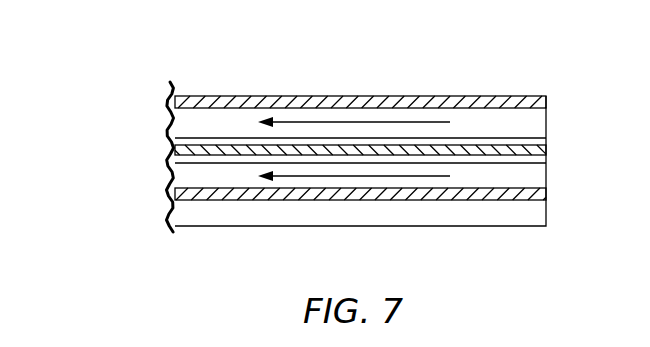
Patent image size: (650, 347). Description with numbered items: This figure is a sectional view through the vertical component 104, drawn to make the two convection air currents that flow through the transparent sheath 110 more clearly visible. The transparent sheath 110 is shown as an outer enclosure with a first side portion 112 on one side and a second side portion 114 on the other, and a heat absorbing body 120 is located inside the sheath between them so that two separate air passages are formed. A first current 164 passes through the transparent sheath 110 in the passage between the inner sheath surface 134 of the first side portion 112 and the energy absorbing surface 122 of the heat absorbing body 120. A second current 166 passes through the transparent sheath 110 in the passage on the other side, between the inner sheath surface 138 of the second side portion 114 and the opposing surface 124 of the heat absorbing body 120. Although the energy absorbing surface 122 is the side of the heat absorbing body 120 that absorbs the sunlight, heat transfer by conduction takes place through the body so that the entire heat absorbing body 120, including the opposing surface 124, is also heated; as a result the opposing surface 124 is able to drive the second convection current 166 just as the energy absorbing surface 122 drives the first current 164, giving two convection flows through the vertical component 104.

The vertical component 104 is at (133, 78).
The transparent sheath 110 is at (501, 88).
The first side portion 112 is at (308, 201).
The second side portion 114 is at (320, 102).
The heat absorbing body 120 is at (536, 149).
The energy absorbing surface 122 is at (213, 156).
The opposing surface 124 is at (202, 143).
The inner sheath surface 134 is at (538, 190).
The inner sheath surface 138 is at (483, 110).
The first current 164 is at (382, 178).
The second current 166 is at (402, 120).